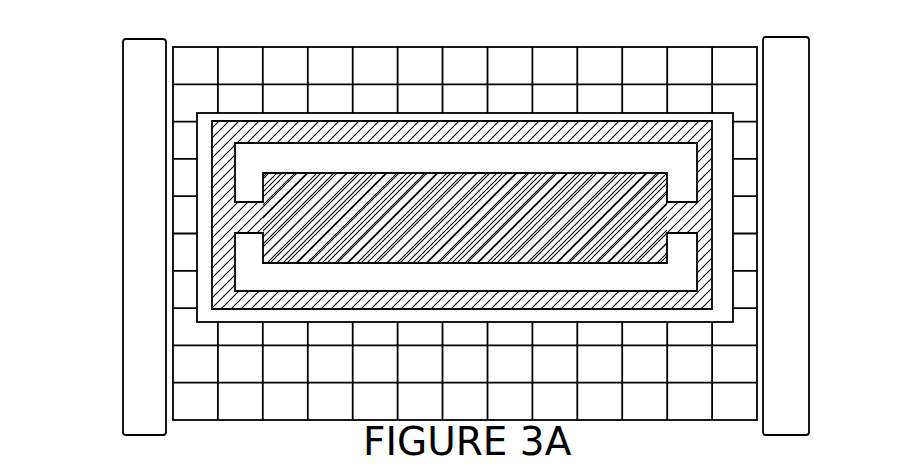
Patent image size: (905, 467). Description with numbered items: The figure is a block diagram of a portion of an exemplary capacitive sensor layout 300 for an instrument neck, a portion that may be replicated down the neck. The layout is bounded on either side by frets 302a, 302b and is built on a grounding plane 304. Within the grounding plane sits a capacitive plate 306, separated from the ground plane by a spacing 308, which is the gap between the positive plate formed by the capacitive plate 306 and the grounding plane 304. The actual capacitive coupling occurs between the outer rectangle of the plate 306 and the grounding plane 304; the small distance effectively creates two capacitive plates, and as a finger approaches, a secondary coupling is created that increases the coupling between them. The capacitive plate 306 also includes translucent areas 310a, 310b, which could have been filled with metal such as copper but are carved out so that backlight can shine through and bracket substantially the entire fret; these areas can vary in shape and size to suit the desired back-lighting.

The capacitive sensor layout 300 is at (65, 47).
The fret 302a is at (162, 244).
The fret 302b is at (805, 244).
The grounding plane 304 is at (352, 40).
The capacitive plate 306 is at (312, 121).
The spacing 308 is at (497, 118).
The translucent area 310a is at (482, 287).
The translucent area 310b is at (482, 167).